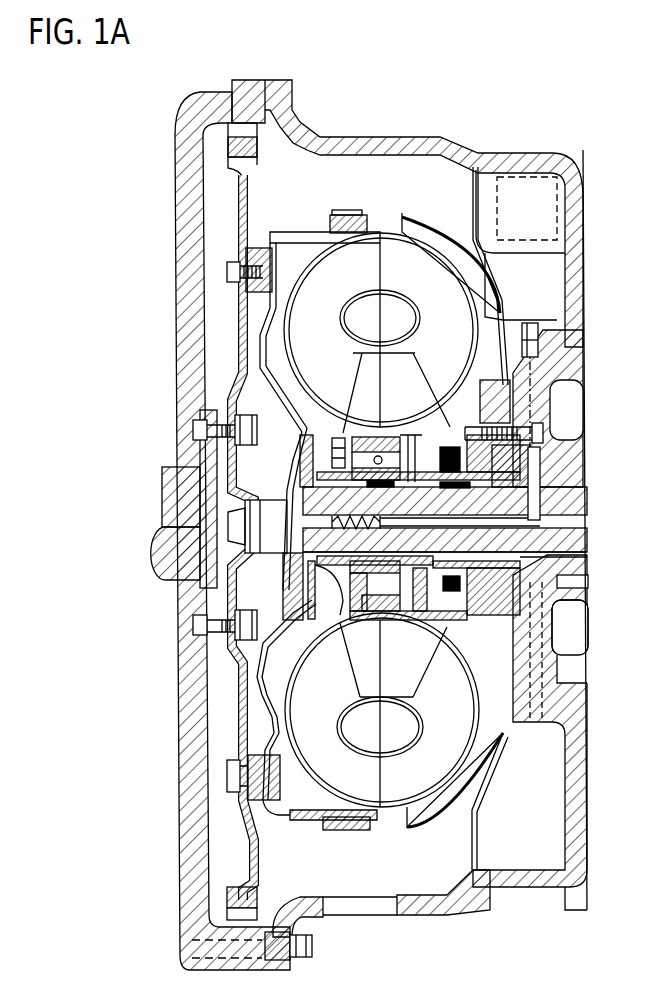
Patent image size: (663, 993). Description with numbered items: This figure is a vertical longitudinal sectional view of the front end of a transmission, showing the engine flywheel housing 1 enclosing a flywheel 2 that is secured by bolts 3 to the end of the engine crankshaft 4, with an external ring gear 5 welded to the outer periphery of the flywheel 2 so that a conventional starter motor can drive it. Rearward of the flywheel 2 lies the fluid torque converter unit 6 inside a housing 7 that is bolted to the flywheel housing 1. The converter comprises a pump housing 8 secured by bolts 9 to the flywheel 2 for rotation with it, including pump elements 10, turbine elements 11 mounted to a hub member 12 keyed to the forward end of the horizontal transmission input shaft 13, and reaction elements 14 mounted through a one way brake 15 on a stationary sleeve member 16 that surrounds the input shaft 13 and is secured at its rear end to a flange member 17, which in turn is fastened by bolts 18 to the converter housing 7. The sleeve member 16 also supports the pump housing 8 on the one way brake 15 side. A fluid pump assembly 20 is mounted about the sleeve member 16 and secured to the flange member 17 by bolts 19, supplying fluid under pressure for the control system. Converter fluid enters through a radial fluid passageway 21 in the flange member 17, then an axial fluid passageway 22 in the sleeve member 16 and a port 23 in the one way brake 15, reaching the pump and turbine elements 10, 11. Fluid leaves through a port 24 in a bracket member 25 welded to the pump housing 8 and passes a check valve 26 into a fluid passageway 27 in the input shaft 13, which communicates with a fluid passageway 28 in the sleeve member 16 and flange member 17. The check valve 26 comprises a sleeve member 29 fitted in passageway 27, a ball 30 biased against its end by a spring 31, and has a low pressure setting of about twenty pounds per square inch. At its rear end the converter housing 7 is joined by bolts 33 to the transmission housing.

The engine flywheel housing 1 is at (183, 188).
The flywheel 2 is at (240, 328).
The bolts 3 is at (193, 430).
The crankshaft 4 is at (160, 480).
The external ring gear 5 is at (233, 128).
The fluid torque converter unit 6 is at (403, 180).
The torque converter housing 7 is at (330, 136).
The pump housing 8 is at (317, 227).
The bolts 9 is at (230, 258).
The pump elements 10 is at (407, 260).
The turbine elements 11 is at (315, 280).
The hub member 12 is at (330, 577).
The transmission input shaft 13 is at (300, 490).
The reaction elements 14 is at (410, 380).
The one way brake 15 is at (416, 440).
The sleeve member 16 is at (447, 490).
The flange member 17 is at (560, 366).
The bolts 18 is at (530, 323).
The bolts 19 is at (543, 430).
The fluid pump assembly 20 is at (500, 641).
The radial fluid passageway 21 is at (557, 638).
The axial fluid passageway 22 is at (560, 558).
The port 23 is at (383, 620).
The port 24 is at (305, 457).
The bracket member 25 is at (317, 433).
The check valve 26 is at (292, 603).
The fluid passageway 27 is at (540, 525).
The fluid passageway 28 is at (540, 472).
The sleeve member 29 is at (287, 557).
The ball 30 is at (350, 529).
The spring 31 is at (394, 529).
The bolts 33 is at (558, 158).